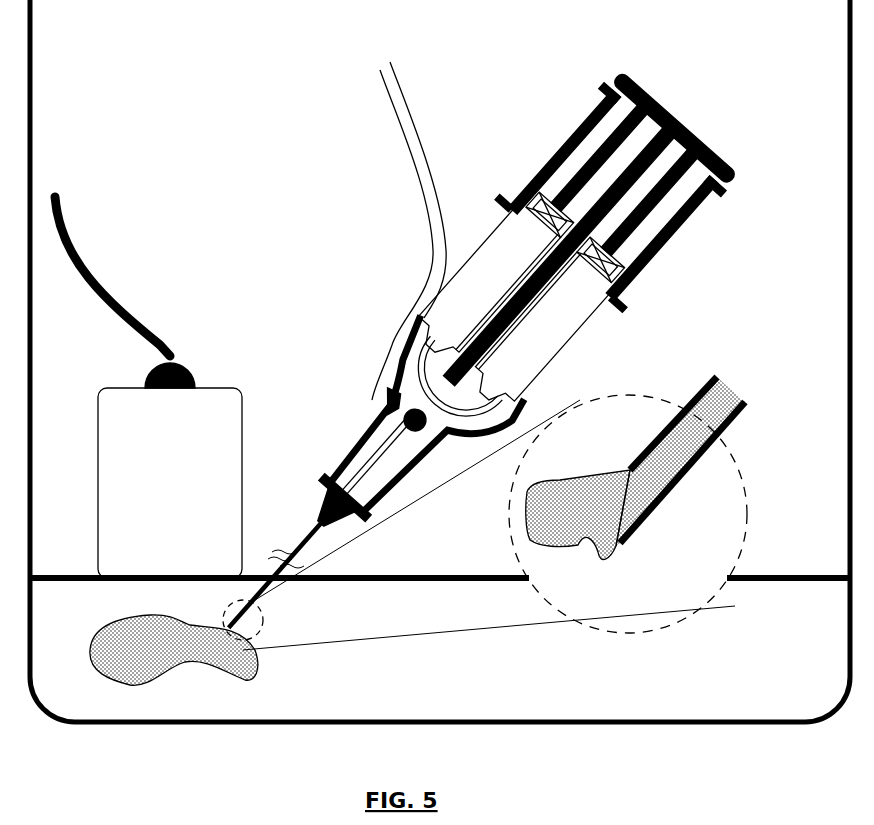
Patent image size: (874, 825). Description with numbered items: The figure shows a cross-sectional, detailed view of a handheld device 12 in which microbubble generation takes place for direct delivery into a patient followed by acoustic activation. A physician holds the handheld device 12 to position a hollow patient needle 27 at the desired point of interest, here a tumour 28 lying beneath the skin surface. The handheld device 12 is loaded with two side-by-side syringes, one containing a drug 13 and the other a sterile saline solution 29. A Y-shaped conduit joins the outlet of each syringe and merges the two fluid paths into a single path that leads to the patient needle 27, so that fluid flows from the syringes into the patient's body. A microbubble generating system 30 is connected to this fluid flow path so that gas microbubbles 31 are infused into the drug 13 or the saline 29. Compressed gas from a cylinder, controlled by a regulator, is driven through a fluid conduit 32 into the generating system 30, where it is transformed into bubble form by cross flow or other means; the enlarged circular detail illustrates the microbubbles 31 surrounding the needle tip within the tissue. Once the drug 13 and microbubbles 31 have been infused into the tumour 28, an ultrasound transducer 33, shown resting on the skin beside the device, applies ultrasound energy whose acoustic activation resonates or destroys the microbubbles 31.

The handheld device 12 is at (680, 133).
The drug 13 is at (492, 277).
The patient needle 27 is at (293, 590).
The tumour 28 is at (175, 628).
The sterile saline solution 29 is at (575, 300).
The microbubble generating system 30 is at (380, 433).
The gas microbubbles 31 is at (670, 494).
The fluid conduit 32 is at (405, 73).
The ultrasound transducer 33 is at (118, 413).